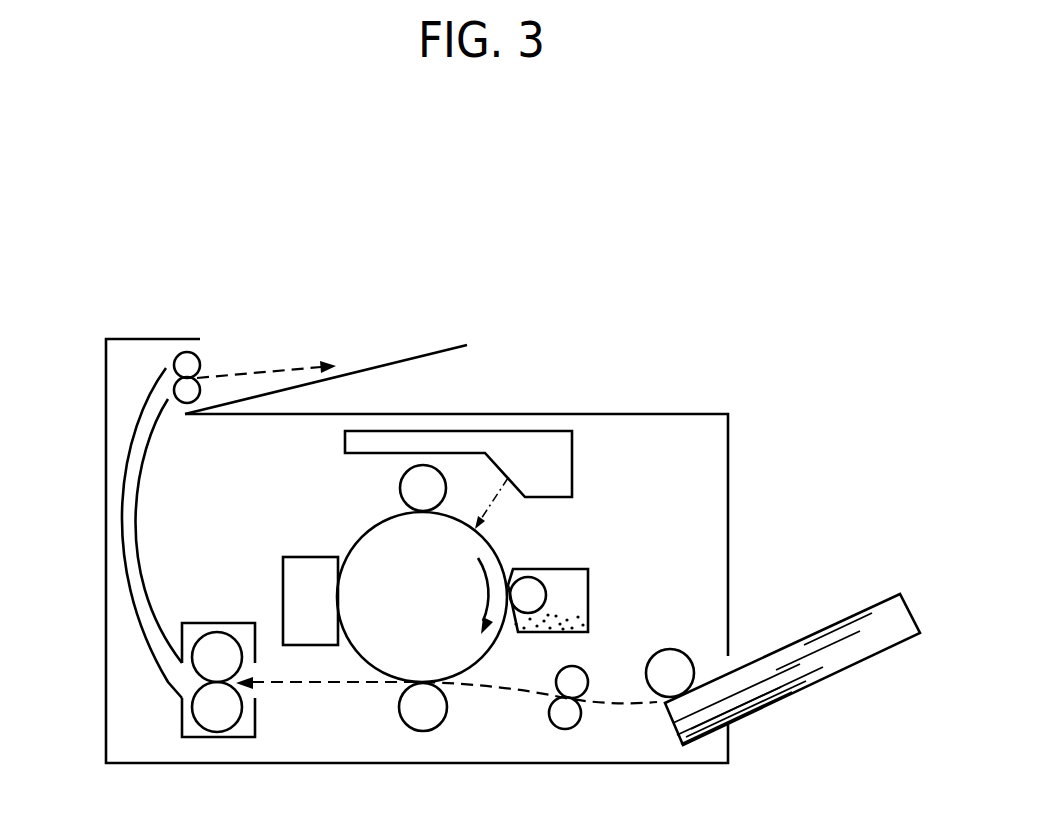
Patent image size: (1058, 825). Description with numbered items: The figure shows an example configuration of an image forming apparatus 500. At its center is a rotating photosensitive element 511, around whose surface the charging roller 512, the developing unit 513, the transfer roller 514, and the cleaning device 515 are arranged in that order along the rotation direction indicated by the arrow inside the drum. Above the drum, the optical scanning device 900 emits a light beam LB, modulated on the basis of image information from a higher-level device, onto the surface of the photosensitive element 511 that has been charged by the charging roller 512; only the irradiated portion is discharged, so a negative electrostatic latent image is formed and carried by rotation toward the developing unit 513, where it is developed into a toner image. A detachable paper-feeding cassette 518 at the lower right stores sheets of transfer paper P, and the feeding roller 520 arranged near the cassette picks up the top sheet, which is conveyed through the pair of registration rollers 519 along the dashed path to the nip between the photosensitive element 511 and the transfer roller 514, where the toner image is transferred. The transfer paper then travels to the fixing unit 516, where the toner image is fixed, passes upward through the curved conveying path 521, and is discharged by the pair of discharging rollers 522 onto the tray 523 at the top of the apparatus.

The image forming apparatus 500 is at (524, 281).
The photosensitive element 511 is at (487, 655).
The charging roller 512 is at (400, 490).
The developing unit 513 is at (577, 569).
The transfer roller 514 is at (442, 723).
The cleaning device 515 is at (311, 557).
The fixing unit 516 is at (218, 623).
The paper-feeding cassette 518 is at (822, 684).
The pair of registration rollers 519 is at (584, 669).
The feeding roller 520 is at (670, 649).
The conveying path 521 is at (118, 528).
The pair of discharging rollers 522 is at (201, 362).
The tray 523 is at (410, 356).
The optical scanning device 900 is at (573, 463).
The light beam LB is at (492, 506).
The transfer paper P is at (805, 643).